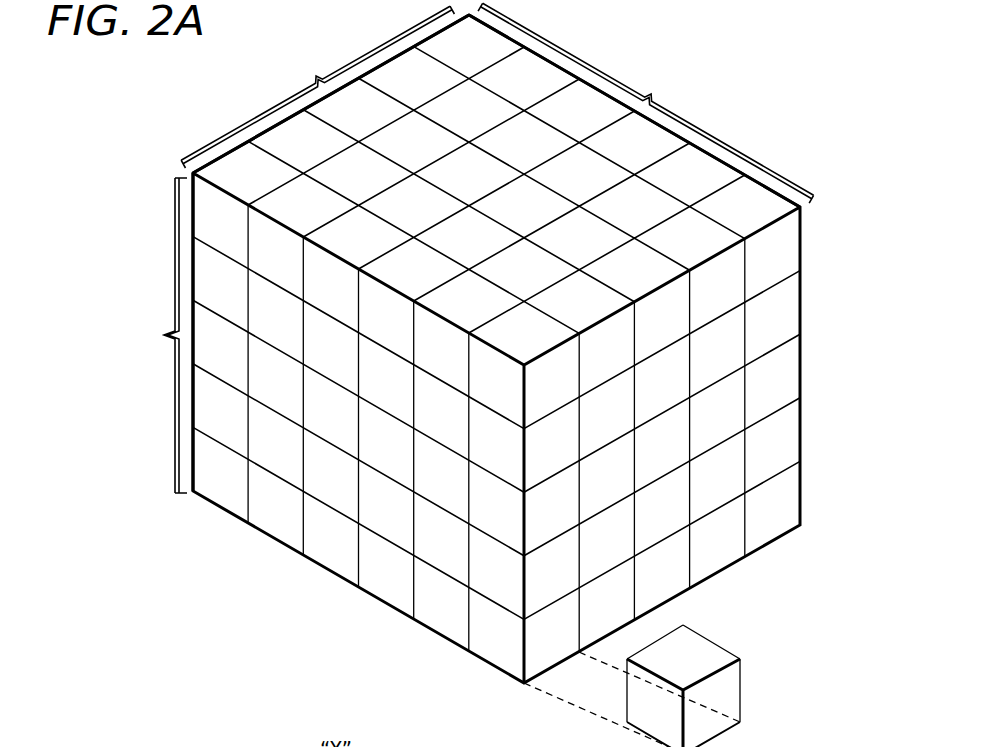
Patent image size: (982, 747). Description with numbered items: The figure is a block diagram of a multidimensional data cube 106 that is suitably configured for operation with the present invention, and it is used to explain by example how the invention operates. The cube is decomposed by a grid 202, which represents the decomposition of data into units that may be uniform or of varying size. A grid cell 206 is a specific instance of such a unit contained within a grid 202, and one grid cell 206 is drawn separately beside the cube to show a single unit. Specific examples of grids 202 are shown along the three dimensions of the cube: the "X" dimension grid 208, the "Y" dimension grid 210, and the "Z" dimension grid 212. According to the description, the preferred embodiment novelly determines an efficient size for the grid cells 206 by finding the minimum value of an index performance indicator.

The multidimensional data cube 106 is at (450, 343).
The grid 202 is at (468, 327).
The grid cell 206 is at (753, 660).
The "X" dimension grid 208 is at (722, 128).
The "Y" dimension grid 210 is at (150, 442).
The "Z" dimension grid 212 is at (222, 124).